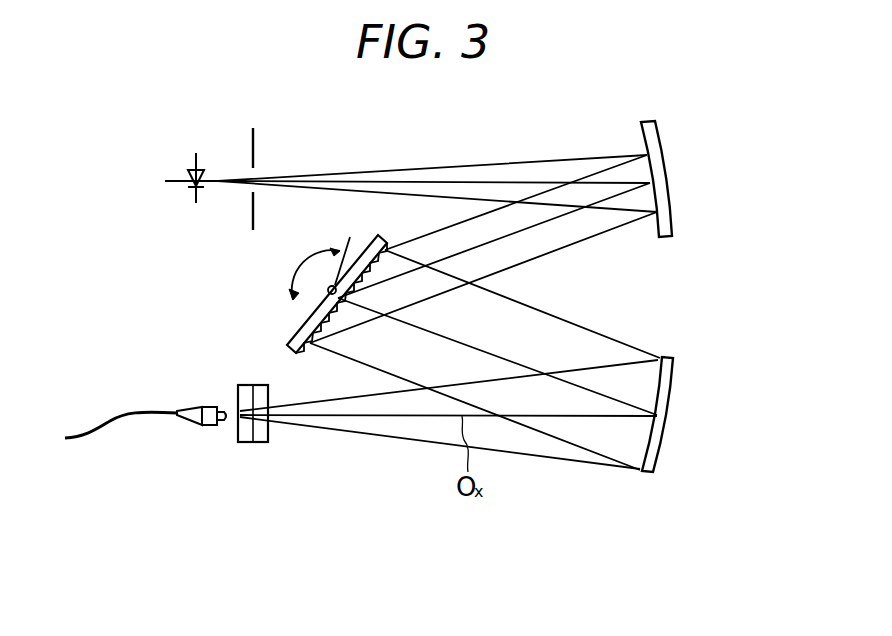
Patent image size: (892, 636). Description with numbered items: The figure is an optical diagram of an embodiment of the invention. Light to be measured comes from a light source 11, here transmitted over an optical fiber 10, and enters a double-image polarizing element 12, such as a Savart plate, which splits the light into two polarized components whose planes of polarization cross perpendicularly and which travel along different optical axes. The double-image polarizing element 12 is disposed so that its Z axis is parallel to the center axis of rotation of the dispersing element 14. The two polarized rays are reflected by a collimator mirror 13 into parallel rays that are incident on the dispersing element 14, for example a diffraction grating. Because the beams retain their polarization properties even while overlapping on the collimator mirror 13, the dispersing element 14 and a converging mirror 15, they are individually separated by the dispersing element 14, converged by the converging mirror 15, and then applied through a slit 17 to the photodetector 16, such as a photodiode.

The optical fiber 10 is at (93, 434).
The light source 11 is at (190, 406).
The double-image polarizing element 12 is at (250, 446).
The collimator mirror 13 is at (660, 452).
The dispersing element 14 is at (302, 330).
The converging mirror 15 is at (663, 158).
The photodetector 16 is at (190, 172).
The slit 17 is at (260, 172).